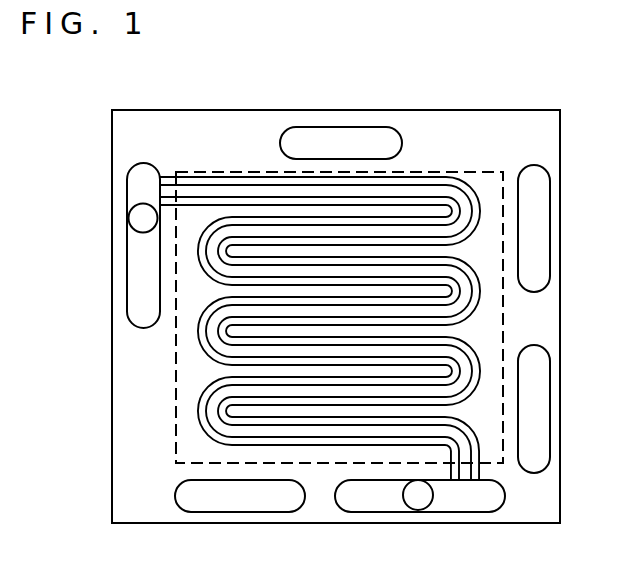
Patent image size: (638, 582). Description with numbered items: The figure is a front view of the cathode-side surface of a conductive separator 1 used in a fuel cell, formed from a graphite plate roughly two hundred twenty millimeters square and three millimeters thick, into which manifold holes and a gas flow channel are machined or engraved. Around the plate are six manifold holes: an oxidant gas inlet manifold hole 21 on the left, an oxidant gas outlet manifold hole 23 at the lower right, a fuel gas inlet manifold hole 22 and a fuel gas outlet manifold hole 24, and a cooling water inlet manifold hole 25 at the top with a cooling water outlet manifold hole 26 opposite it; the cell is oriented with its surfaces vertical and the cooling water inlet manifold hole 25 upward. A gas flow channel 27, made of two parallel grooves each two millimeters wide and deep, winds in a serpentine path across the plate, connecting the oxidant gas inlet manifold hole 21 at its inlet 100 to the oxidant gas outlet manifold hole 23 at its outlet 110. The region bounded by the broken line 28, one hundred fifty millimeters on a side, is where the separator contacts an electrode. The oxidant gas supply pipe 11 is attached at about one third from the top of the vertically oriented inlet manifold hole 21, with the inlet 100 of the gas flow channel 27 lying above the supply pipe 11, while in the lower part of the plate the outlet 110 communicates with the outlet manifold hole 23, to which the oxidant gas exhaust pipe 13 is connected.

The separator 1 is at (493, 110).
The oxidant gas supply pipe 11 is at (140, 222).
The oxidant gas exhaust pipe 13 is at (418, 503).
The oxidant gas inlet manifold hole 21 is at (128, 200).
The fuel gas inlet manifold hole 22 is at (550, 210).
The oxidant gas outlet manifold hole 23 is at (367, 513).
The fuel gas outlet manifold hole 24 is at (235, 513).
The cooling water inlet manifold hole 25 is at (338, 127).
The cooling water outlet manifold hole 26 is at (550, 400).
The gas flow channel 27 is at (262, 174).
The broken line 28 is at (503, 327).
The inlet of the gas flow channel 100 is at (152, 200).
The outlet of the gas flow channel 110 is at (455, 481).